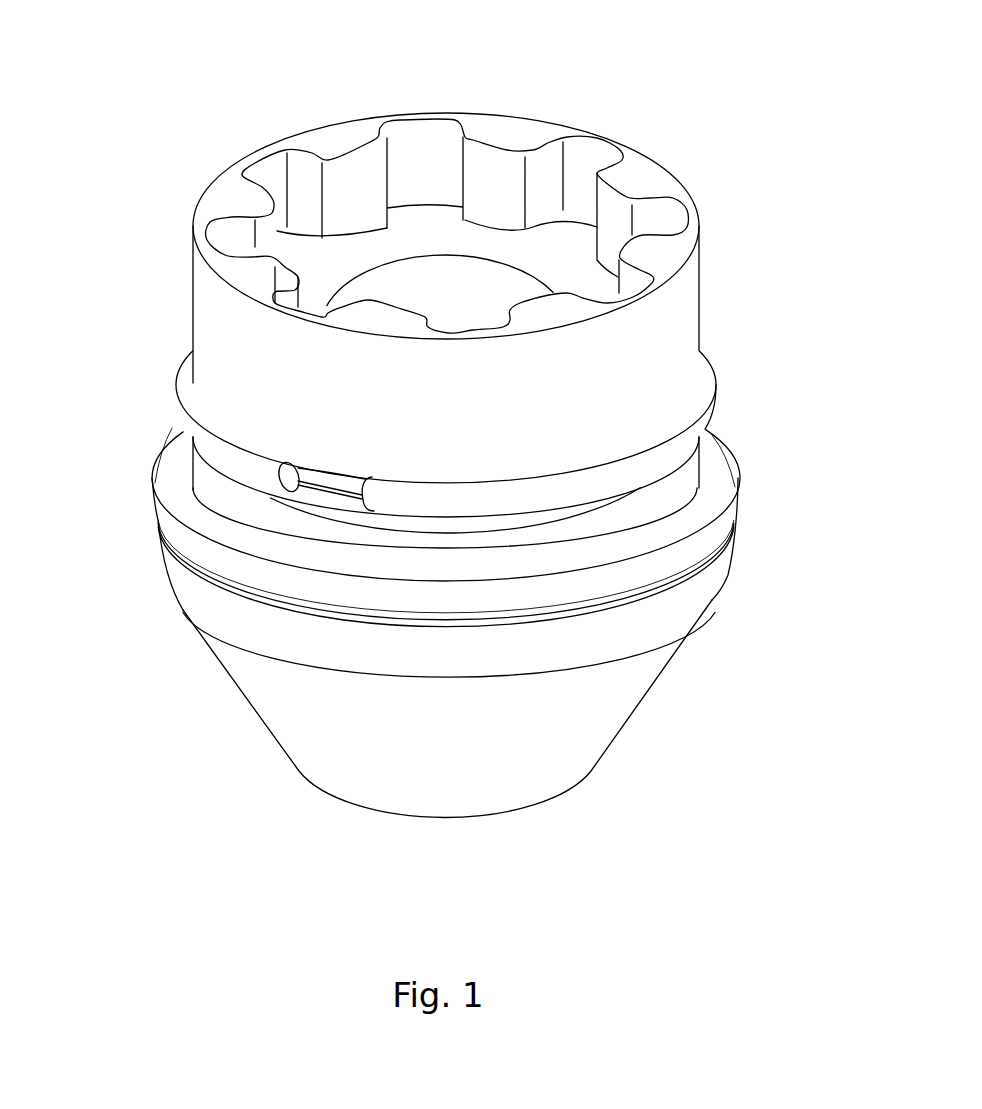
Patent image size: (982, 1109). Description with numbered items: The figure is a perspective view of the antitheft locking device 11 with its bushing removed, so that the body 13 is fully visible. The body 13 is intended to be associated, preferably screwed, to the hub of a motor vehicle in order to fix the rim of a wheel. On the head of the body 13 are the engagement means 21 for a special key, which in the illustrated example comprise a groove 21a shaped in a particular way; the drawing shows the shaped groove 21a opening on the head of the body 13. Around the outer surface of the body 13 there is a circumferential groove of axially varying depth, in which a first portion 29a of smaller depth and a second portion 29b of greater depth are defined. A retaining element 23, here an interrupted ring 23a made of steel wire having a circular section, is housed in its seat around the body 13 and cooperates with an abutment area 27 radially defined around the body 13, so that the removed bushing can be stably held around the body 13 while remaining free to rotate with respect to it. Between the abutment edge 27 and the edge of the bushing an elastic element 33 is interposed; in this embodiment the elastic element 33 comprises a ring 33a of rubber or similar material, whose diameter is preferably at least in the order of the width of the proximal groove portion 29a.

The antitheft locking device 11 is at (213, 817).
The body 13 is at (423, 286).
The engagement means 21 is at (396, 169).
The groove 21a is at (577, 177).
The retaining element 23 is at (177, 355).
The interrupted ring 23a is at (705, 374).
The abutment area 27 is at (205, 548).
The first portion of the circumferential groove 29a is at (327, 480).
The second portion of the circumferential groove 29b is at (338, 508).
The elastic element 33 is at (146, 455).
The ring of rubber 33a is at (723, 483).